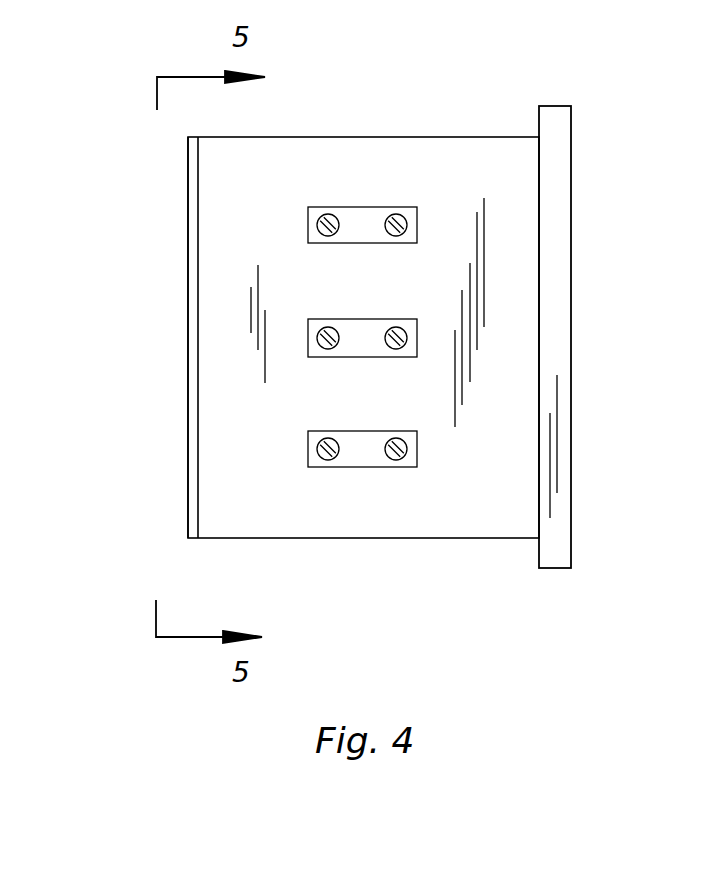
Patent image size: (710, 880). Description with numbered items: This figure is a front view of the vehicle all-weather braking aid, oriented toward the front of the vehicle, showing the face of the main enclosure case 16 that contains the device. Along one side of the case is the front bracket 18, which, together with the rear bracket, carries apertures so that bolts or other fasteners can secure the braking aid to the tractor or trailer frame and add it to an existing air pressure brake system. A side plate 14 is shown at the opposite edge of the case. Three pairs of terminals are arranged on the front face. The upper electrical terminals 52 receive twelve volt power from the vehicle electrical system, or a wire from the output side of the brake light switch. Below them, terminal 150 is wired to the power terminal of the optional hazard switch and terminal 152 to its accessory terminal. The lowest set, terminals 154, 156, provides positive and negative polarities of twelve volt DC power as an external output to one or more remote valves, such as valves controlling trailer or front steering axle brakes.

The mounting plate 14 is at (572, 150).
The main enclosure case 16 is at (381, 180).
The front bracket 18 is at (187, 203).
The electrical terminals 52 is at (313, 228).
The terminal 150 is at (313, 340).
The terminal 152 is at (414, 340).
The terminal 154 is at (313, 452).
The terminal 156 is at (414, 452).